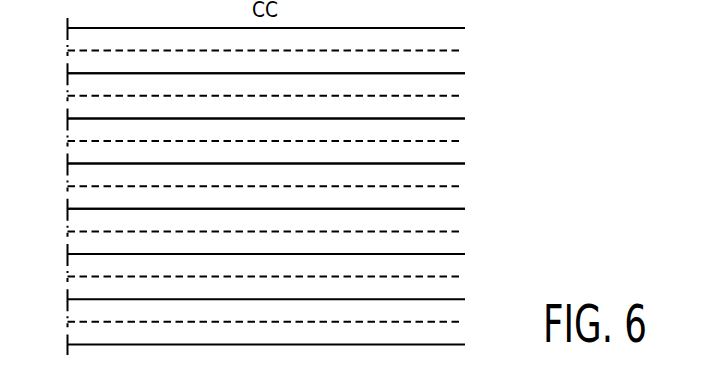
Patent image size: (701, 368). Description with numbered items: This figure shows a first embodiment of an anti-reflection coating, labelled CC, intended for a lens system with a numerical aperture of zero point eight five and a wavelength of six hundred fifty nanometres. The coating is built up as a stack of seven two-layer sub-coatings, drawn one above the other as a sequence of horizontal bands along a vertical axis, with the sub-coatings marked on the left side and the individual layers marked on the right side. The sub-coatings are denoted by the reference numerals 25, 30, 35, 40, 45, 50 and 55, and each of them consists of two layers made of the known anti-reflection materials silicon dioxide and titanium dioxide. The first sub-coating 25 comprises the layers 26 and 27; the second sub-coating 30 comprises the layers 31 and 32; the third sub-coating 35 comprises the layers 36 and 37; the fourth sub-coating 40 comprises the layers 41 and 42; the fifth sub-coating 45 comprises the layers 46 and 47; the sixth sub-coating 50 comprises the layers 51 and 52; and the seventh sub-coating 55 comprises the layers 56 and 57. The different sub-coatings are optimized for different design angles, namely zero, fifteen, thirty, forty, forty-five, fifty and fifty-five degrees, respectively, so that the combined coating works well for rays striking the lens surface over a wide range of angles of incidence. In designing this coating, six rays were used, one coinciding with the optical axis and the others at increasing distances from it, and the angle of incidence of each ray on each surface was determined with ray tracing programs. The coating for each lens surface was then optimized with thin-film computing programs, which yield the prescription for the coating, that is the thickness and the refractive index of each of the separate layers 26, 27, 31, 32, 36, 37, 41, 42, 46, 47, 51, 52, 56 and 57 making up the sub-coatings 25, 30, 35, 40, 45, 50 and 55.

The sub-coating 25 is at (252, 51).
The layer 26 is at (450, 44).
The layer 27 is at (450, 65).
The sub-coating 30 is at (252, 96).
The layer 31 is at (450, 89).
The layer 32 is at (450, 110).
The sub-coating 35 is at (252, 141).
The layer 36 is at (450, 134).
The layer 37 is at (450, 155).
The sub-coating 40 is at (252, 187).
The layer 41 is at (450, 179).
The layer 42 is at (450, 200).
The sub-coating 45 is at (252, 232).
The layer 46 is at (450, 224).
The layer 47 is at (450, 245).
The sub-coating 50 is at (252, 277).
The layer 51 is at (450, 269).
The layer 52 is at (450, 290).
The sub-coating 55 is at (252, 322).
The layer 56 is at (450, 314).
The layer 57 is at (450, 335).